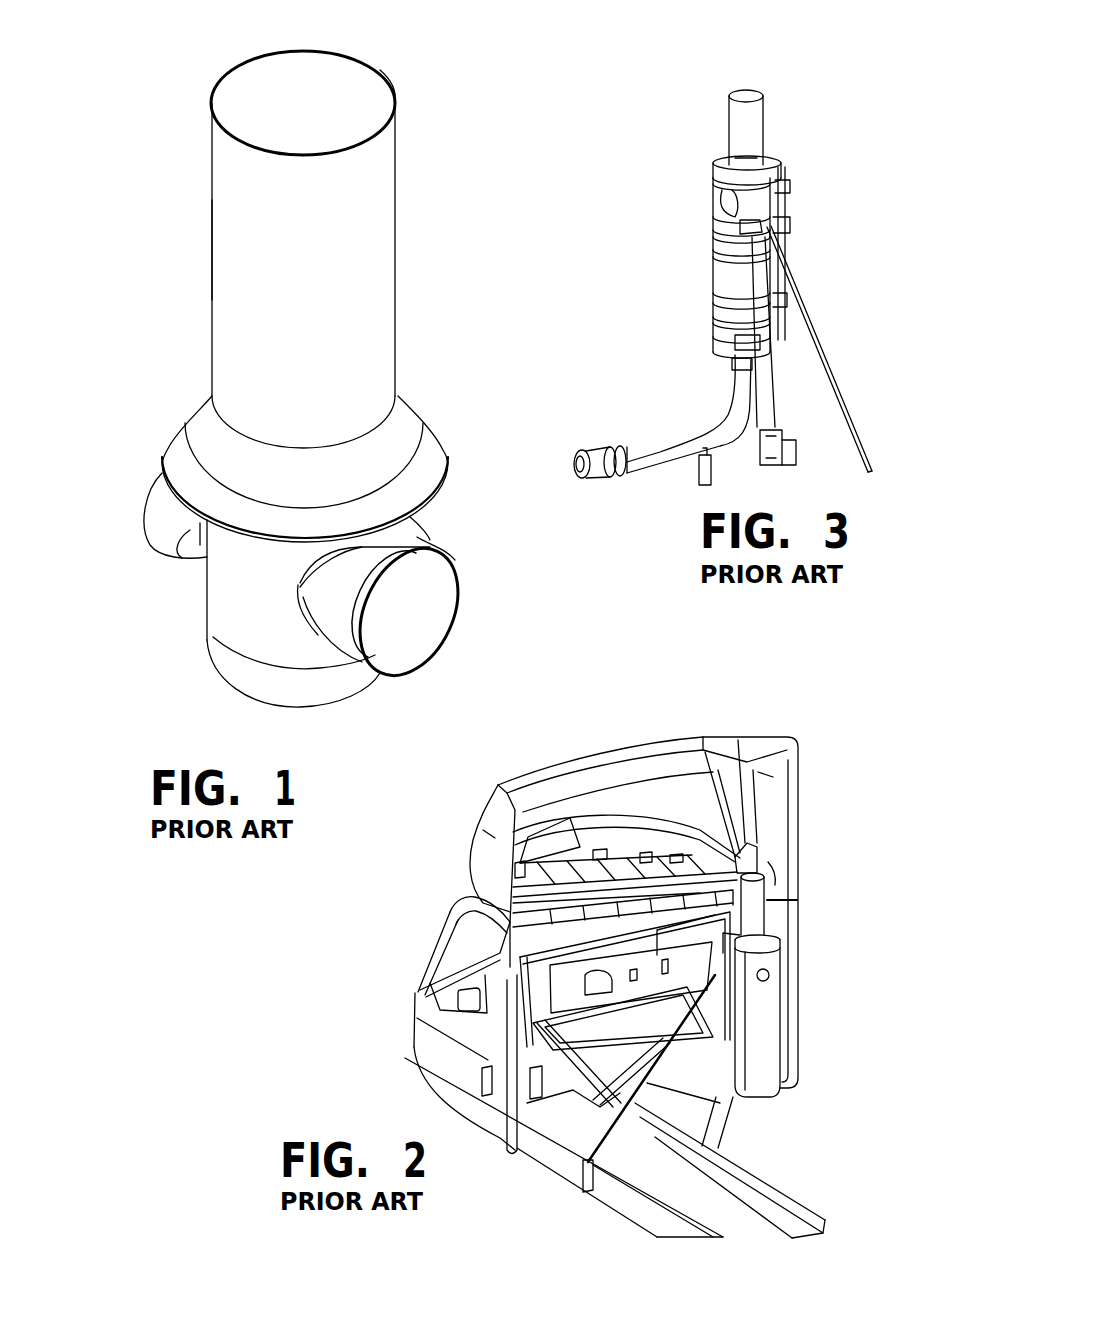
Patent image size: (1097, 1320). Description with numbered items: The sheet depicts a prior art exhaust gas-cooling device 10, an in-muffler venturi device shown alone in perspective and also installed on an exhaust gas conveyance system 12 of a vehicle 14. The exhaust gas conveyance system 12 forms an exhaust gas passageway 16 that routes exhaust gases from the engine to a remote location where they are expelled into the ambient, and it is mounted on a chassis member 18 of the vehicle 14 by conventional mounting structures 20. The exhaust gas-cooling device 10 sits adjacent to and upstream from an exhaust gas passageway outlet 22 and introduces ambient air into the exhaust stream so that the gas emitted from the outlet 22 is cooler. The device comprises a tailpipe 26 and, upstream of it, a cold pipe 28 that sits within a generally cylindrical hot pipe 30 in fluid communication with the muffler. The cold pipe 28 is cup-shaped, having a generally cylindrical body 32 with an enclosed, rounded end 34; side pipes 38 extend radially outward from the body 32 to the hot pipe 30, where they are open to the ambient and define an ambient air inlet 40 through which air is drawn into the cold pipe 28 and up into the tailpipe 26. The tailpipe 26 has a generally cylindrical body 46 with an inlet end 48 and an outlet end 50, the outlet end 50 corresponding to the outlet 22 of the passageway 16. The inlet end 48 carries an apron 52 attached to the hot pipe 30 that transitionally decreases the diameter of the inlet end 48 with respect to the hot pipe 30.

In FIG. 1, the exhaust gas-cooling device 10 is at (128, 219).
In FIG. 3, the exhaust gas-cooling device 10 is at (780, 137).
In FIG. 2, the exhaust gas-cooling device 10 is at (860, 1015).
In FIG. 3, the exhaust gas conveyance system 12 is at (686, 330).
In FIG. 2, the vehicle 14 is at (705, 745).
In FIG. 3, the exhaust gas passageway 16 is at (660, 448).
In FIG. 2, the chassis member 18 is at (760, 1181).
In FIG. 2, the mounting structures 20 is at (732, 1131).
In FIG. 1, the exhaust gas passageway outlet 22 is at (327, 48).
In FIG. 3, the exhaust gas passageway outlet 22 is at (748, 92).
In FIG. 1, the tailpipe 26 is at (340, 232).
In FIG. 3, the tailpipe 26 is at (738, 127).
In FIG. 1, the cold pipe 28 is at (231, 590).
In FIG. 3, the hot pipe 30 is at (763, 203).
In FIG. 1, the cylindrical body 32 is at (280, 655).
In FIG. 1, the rounded end 34 is at (288, 708).
In FIG. 1, the side pipes 38 is at (192, 543).
In FIG. 1, the ambient air inlet 40 is at (150, 503).
In FIG. 1, the cylindrical body 46 is at (338, 303).
In FIG. 1, the inlet end 48 is at (447, 493).
In FIG. 1, the outlet end 50 is at (397, 97).
In FIG. 1, the apron 52 is at (430, 445).